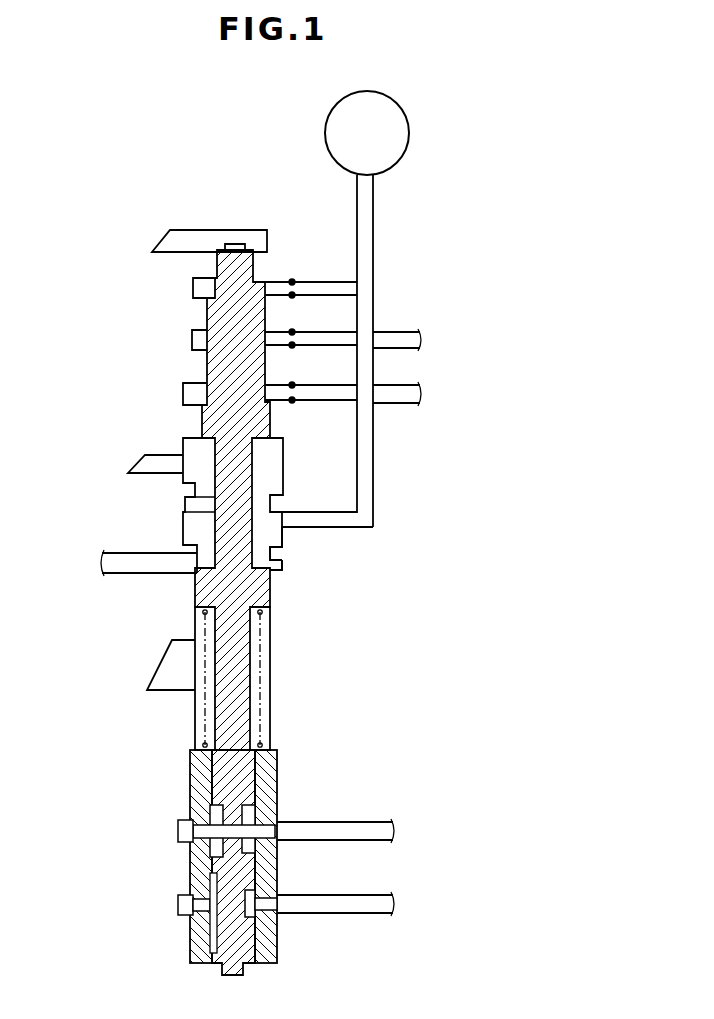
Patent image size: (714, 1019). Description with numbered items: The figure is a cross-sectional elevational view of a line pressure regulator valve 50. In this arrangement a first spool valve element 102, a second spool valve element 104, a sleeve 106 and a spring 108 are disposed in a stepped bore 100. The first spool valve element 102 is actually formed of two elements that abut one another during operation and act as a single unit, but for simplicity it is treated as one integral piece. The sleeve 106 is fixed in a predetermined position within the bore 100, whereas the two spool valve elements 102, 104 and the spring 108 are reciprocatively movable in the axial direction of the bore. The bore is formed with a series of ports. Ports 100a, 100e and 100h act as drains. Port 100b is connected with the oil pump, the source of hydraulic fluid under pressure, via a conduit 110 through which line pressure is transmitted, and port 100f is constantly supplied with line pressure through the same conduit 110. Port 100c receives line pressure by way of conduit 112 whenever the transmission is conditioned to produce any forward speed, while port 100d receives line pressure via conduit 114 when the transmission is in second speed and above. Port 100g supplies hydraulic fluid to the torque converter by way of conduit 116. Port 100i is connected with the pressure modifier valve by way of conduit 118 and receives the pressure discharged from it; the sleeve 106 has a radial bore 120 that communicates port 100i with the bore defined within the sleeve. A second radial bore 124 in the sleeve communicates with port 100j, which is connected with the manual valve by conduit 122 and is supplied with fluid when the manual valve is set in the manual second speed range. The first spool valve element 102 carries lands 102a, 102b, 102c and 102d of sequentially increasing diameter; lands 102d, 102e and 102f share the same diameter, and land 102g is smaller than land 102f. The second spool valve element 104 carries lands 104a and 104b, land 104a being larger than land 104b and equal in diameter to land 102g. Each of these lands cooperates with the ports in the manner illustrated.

The pressure regulator valve 50 is at (90, 273).
The stepped bore 100 is at (265, 645).
The port 100a is at (293, 216).
The port 100b is at (267, 287).
The port 100c is at (270, 340).
The port 100d is at (270, 385).
The port 100e is at (277, 463).
The port 100f is at (290, 530).
The port 100g is at (278, 570).
The port 100h is at (195, 660).
The port 100i is at (285, 830).
The port 100j is at (285, 905).
The first spool valve element 102 is at (240, 248).
The land 102a is at (215, 262).
The land 102b is at (205, 318).
The land 102c is at (200, 365).
The land 102d is at (207, 432).
The land 102e is at (200, 508).
The land 102f is at (200, 592).
The land 102g is at (215, 775).
The second spool valve element 104 is at (242, 955).
The land 104a is at (208, 868).
The land 104b is at (217, 930).
The sleeve 106 is at (270, 773).
The spring 108 is at (265, 745).
The conduit 110 is at (373, 258).
The conduit 112 is at (392, 330).
The conduit 114 is at (400, 387).
The conduit 116 is at (112, 553).
The conduit 118 is at (372, 822).
The radial bore 120 is at (262, 838).
The conduit 122 is at (383, 895).
The radial bore 124 is at (267, 918).